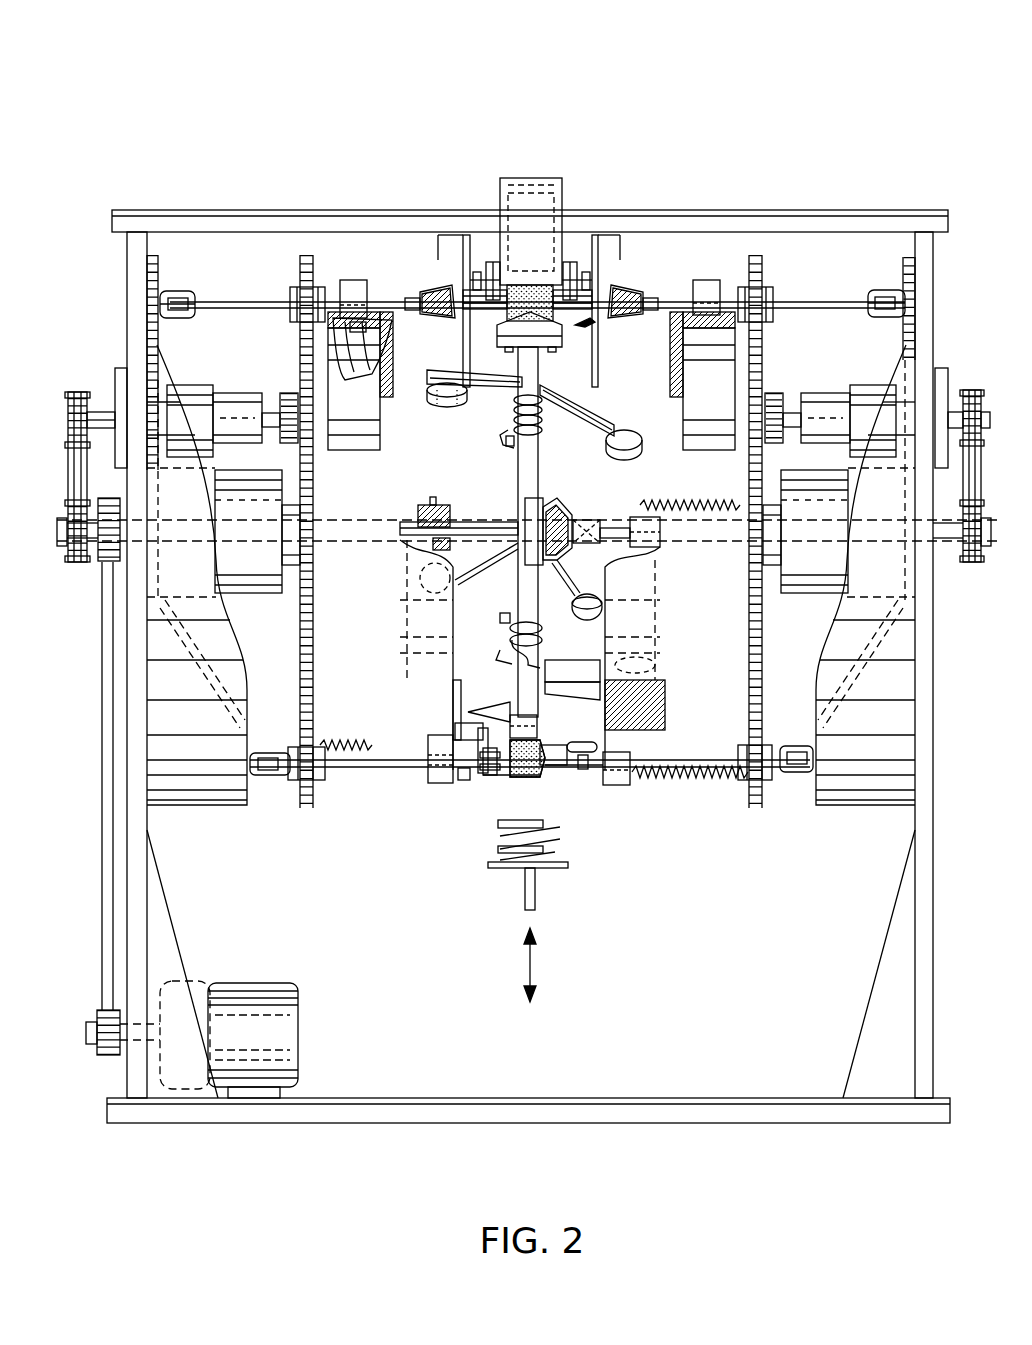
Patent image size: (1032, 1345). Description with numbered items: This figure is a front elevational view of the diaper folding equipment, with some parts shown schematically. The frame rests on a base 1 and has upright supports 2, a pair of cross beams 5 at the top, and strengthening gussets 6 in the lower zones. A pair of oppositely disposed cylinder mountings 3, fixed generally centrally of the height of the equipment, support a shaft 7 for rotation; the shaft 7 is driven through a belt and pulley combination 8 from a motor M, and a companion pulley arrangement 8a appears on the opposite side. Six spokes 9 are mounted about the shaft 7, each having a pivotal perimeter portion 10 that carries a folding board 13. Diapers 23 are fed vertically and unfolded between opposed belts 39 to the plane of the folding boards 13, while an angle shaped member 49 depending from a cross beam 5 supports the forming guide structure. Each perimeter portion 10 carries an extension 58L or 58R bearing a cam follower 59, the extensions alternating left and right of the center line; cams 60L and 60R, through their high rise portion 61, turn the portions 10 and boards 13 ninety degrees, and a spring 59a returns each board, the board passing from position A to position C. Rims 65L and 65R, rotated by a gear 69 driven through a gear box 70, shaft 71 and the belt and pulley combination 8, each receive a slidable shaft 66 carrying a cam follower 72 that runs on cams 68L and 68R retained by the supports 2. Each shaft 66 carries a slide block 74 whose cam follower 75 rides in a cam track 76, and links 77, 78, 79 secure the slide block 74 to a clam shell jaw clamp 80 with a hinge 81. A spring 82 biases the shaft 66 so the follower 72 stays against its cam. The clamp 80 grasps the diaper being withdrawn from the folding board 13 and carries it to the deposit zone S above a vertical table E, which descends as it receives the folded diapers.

The base 1 is at (636, 1097).
The upright supports 2 is at (127, 880).
The cylinder mounting 3 is at (253, 576).
The cross beams 5 is at (205, 210).
The strengthening gussets 6 is at (152, 852).
The shaft 7 is at (62, 546).
The belt and pulley combination 8 is at (62, 448).
The belt drive 8a is at (972, 570).
The spokes 9 is at (538, 485).
The perimeter portion 10 is at (512, 405).
The folding board 13 is at (606, 290).
The diapers 23 is at (520, 292).
The opposed belts 39 is at (540, 190).
The angle shaped member 49 is at (462, 262).
The left extension 58L is at (447, 372).
The right extension 58R is at (614, 426).
The cam follower 59 is at (447, 404).
The spring 59a is at (505, 440).
The left cam 60L is at (405, 639).
The right cam 60R is at (612, 639).
The high rise portion 61 is at (435, 548).
The left rim 65L is at (322, 790).
The right rim 65R is at (758, 790).
The shaft 66 is at (215, 302).
The left cam 68L is at (170, 734).
The right cam 68R is at (907, 734).
The gear 69 is at (296, 620).
The gear box 70 is at (185, 385).
The shaft 71 is at (118, 372).
The cam follower 72 is at (183, 291).
The slide block 74 is at (352, 280).
The cam follower 75 is at (422, 296).
The cam track 76 is at (335, 372).
The link 77 is at (463, 780).
The link 78 is at (490, 778).
The link 79 is at (500, 773).
The jaw clamp 80 is at (548, 768).
The hinge 81 is at (478, 705).
The spring 82 is at (356, 742).
The position A is at (520, 467).
The position C is at (520, 590).
The deposit zone S is at (548, 840).
The vertical table E is at (536, 890).
The motor M is at (233, 1045).